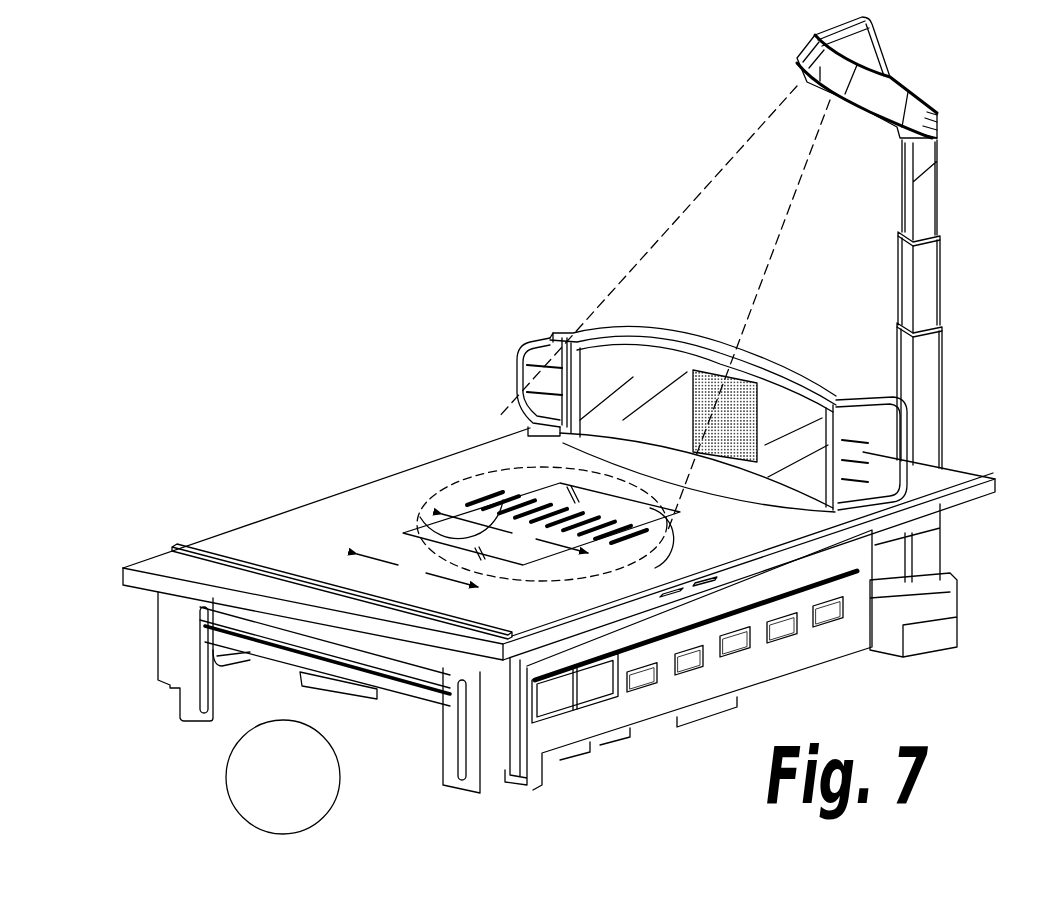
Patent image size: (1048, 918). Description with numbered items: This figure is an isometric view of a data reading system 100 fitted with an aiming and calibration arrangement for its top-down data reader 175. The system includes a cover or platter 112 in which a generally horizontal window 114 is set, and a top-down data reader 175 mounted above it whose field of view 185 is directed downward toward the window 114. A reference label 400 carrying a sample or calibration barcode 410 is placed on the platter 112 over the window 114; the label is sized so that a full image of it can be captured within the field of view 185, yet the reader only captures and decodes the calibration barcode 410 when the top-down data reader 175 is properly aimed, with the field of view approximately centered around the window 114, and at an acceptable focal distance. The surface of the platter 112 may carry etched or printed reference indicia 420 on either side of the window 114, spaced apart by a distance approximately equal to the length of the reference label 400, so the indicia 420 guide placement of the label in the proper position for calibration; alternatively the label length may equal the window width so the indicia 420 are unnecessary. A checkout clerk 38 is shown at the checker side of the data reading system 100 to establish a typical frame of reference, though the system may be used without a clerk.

The data reading system 100 is at (516, 266).
The platter 112 is at (295, 533).
The horizontal window 114 is at (640, 520).
The top-down data reader 175 is at (941, 144).
The field of view 185 is at (745, 205).
The reference label 400 is at (537, 500).
The calibration barcode 410 is at (503, 525).
The reference indicia 420 is at (490, 515).
The checkout clerk 38 is at (226, 777).